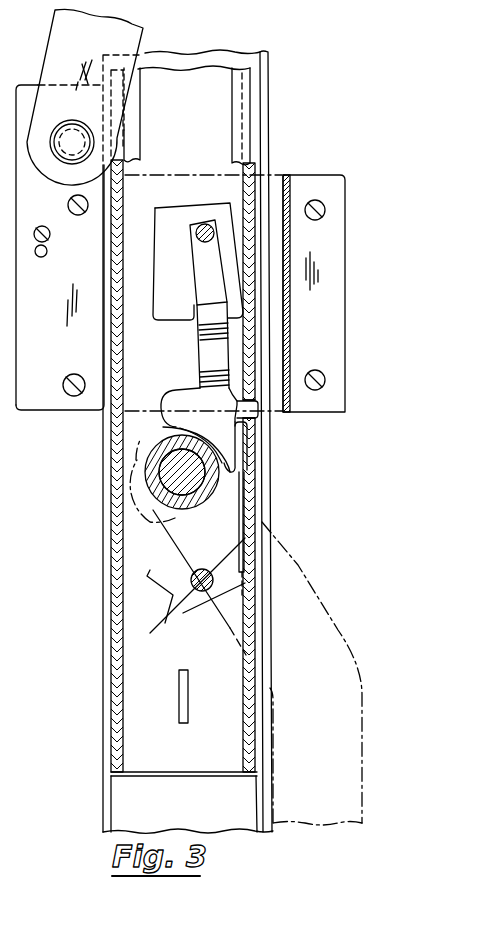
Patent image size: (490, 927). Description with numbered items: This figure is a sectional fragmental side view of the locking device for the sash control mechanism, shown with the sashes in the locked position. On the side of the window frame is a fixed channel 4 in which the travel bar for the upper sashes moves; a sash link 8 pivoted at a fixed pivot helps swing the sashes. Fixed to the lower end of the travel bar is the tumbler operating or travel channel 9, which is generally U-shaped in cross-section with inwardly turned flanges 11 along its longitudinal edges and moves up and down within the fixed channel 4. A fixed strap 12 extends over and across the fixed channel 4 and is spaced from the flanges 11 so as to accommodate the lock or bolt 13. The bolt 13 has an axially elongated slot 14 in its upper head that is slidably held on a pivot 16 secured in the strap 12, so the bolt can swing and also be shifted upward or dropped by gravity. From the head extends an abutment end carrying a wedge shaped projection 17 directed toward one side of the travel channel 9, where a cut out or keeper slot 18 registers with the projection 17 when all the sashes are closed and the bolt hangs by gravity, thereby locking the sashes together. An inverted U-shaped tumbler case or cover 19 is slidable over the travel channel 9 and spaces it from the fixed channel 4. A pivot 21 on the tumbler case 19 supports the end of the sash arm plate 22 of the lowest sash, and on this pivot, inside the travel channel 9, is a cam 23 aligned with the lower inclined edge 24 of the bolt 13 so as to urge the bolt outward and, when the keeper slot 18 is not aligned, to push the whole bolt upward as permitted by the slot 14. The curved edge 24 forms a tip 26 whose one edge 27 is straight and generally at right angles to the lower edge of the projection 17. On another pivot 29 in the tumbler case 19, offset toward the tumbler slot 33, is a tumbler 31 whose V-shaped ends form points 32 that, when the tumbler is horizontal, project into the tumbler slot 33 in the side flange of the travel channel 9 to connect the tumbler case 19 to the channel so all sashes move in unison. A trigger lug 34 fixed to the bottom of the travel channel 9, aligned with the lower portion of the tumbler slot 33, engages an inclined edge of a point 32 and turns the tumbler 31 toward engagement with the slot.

The fixed channel 4 is at (268, 103).
The sash link 8 is at (67, 33).
The travel channel 9 is at (197, 118).
The flanges 11 is at (127, 147).
The fixed strap 12 is at (290, 313).
The bolt 13 is at (194, 348).
The elongated slot 14 is at (203, 280).
The pivot 16 is at (204, 224).
The wedge shaped projection 17 is at (256, 414).
The keeper slot 18 is at (256, 390).
The tumbler case 19 is at (255, 526).
The pivot 21 is at (170, 478).
The sash arm plate 22 is at (362, 742).
The cam 23 is at (150, 522).
The inclined edge 24 is at (172, 427).
The tip 26 is at (234, 468).
The edge 27 is at (247, 447).
The tumbler pivot 29 is at (196, 593).
The tumbler 31 is at (173, 570).
The points 32 is at (242, 535).
The tumbler slot 33 is at (247, 637).
The trigger lug 34 is at (178, 703).